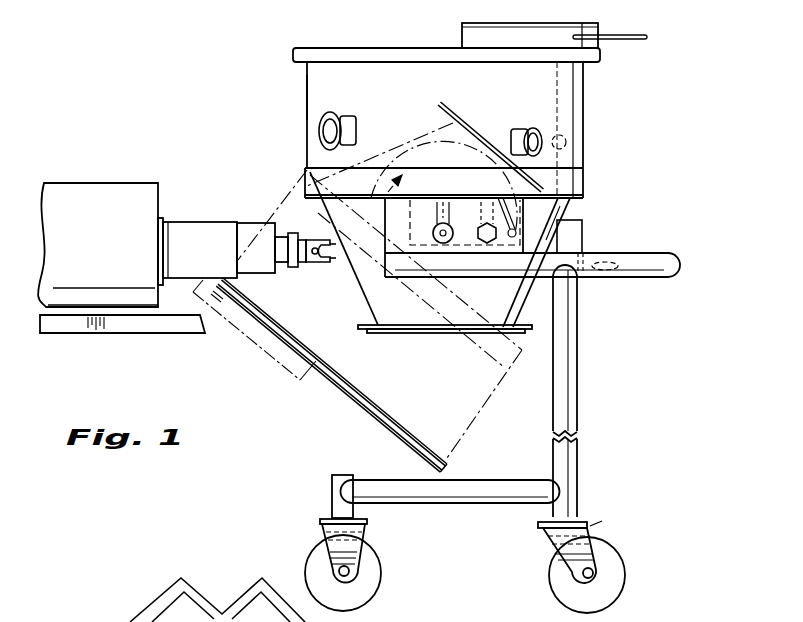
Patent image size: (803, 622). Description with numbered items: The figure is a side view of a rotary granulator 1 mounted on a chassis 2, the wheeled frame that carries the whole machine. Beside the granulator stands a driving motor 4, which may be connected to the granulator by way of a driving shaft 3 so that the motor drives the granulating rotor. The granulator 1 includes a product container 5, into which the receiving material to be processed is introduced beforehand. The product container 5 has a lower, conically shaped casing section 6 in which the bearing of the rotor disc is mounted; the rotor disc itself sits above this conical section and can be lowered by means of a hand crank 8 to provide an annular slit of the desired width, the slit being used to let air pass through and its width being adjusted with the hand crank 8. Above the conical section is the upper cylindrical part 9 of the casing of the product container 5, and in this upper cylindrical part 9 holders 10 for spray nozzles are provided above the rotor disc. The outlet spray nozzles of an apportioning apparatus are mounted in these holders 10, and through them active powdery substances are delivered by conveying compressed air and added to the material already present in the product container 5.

The rotary granulator 1 is at (238, 22).
The chassis 2 is at (637, 268).
The driving shaft 3 is at (326, 268).
The driving motor 4 is at (90, 198).
The product container 5 is at (591, 113).
The conically shaped casing section 6 is at (377, 296).
The hand crank 8 is at (582, 238).
The upper cylindrical part 9 is at (318, 93).
The holders for spray nozzles 10 is at (326, 133).